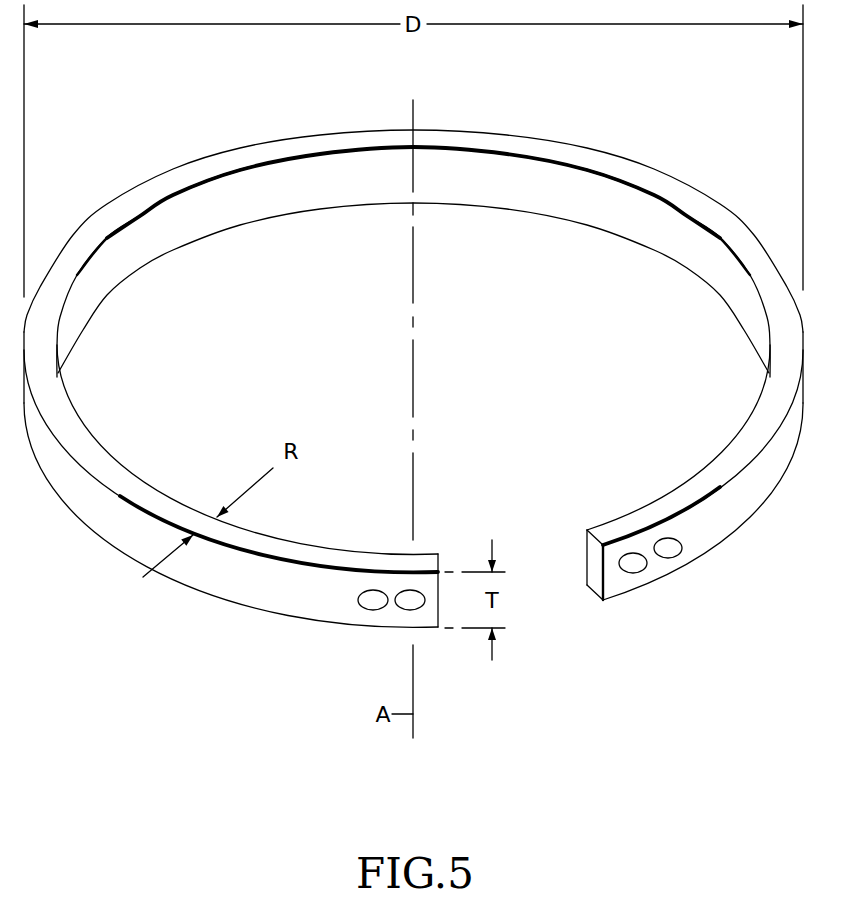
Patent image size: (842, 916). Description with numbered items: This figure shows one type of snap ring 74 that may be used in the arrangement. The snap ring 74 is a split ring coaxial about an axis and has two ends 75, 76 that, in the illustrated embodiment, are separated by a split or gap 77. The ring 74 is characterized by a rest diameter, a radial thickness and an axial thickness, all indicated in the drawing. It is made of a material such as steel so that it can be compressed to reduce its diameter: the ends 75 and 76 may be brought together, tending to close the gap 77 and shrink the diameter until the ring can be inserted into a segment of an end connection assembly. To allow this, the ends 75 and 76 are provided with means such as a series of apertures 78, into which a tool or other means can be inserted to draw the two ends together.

The snap ring 74 is at (632, 137).
The end 75 is at (613, 583).
The end 76 is at (430, 618).
The gap 77 is at (548, 620).
The apertures 78 is at (410, 608).